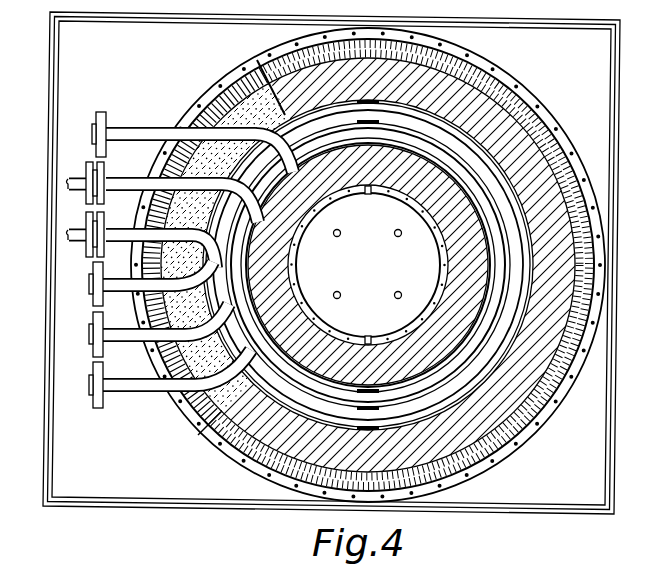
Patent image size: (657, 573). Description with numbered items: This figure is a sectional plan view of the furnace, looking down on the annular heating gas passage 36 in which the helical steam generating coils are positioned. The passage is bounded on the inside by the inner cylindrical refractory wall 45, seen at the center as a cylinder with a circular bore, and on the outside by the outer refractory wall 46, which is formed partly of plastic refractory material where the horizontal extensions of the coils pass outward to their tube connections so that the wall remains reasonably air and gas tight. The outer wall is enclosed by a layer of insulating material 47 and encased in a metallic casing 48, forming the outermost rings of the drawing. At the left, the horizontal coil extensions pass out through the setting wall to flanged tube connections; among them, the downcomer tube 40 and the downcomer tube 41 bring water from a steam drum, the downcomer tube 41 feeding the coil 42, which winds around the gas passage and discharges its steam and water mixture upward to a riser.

The annular heating gas passage 36 is at (479, 166).
The downcomer tube 40 is at (70, 189).
The downcomer tube 41 is at (70, 242).
The coil 42 is at (122, 228).
The inner cylindrical refractory wall 45 is at (460, 282).
The outer refractory wall 46 is at (484, 428).
The layer of insulating material 47 is at (219, 436).
The metallic casing 48 is at (187, 411).